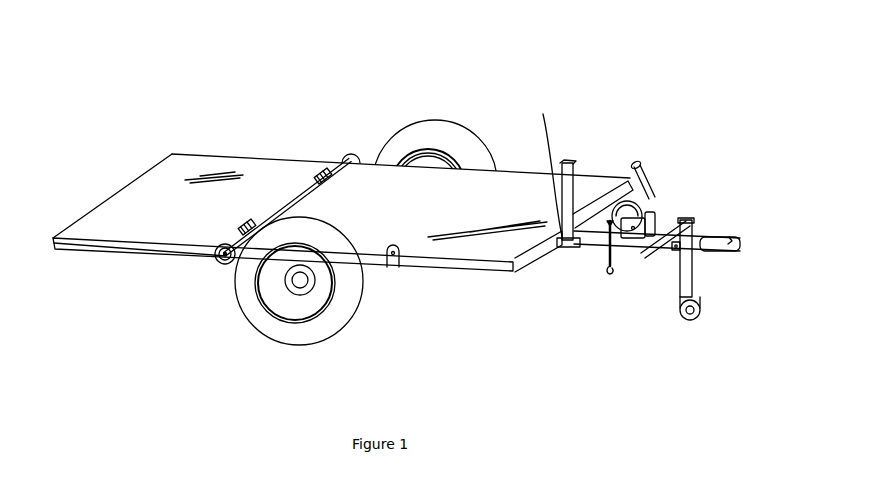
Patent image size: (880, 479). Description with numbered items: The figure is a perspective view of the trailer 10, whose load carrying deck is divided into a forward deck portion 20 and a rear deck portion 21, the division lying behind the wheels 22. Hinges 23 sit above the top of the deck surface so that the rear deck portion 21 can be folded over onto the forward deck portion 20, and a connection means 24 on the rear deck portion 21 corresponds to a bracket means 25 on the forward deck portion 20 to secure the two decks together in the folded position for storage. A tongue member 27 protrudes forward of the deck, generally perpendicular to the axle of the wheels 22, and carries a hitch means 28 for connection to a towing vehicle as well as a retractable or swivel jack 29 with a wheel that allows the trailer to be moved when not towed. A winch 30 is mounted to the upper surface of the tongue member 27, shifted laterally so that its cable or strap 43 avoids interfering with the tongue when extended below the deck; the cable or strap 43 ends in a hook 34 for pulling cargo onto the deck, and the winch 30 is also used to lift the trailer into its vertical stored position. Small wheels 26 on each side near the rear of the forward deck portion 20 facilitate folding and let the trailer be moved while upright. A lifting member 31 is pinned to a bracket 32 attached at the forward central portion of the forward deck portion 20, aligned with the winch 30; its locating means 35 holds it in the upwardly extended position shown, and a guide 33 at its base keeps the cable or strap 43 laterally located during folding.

The trailer 10 is at (402, 68).
The forward deck portion 20 is at (627, 229).
The rear deck portion 21 is at (257, 155).
The wheels 22 is at (452, 130).
The hinges 23 is at (324, 166).
The connection means 24 is at (57, 249).
The bracket means 25 is at (398, 267).
The small wheels 26 is at (216, 262).
The tongue member 27 is at (697, 228).
The hitch means 28 is at (733, 237).
The swivel jack 29 is at (692, 262).
The winch 30 is at (650, 195).
The lifting member 31 is at (570, 164).
The bracket 32 is at (541, 263).
The guide 33 is at (573, 250).
The hook 34 is at (614, 272).
The locating means 35 is at (545, 166).
The cable or strap 43 is at (617, 253).